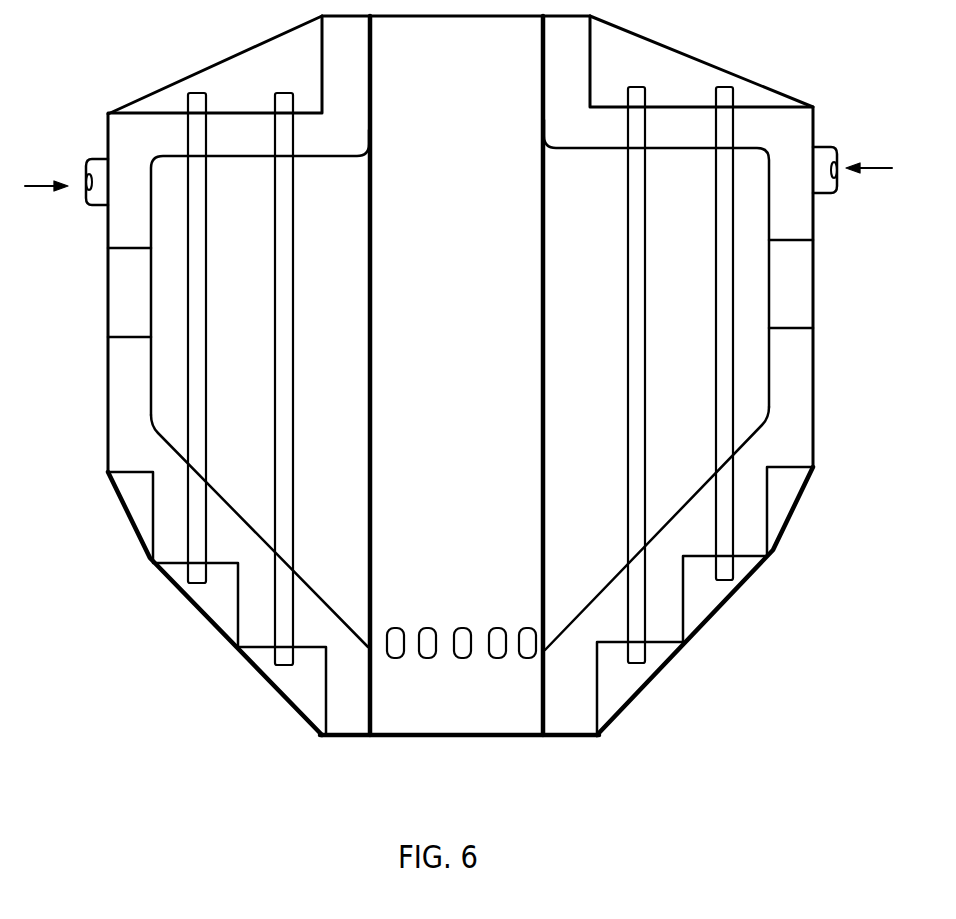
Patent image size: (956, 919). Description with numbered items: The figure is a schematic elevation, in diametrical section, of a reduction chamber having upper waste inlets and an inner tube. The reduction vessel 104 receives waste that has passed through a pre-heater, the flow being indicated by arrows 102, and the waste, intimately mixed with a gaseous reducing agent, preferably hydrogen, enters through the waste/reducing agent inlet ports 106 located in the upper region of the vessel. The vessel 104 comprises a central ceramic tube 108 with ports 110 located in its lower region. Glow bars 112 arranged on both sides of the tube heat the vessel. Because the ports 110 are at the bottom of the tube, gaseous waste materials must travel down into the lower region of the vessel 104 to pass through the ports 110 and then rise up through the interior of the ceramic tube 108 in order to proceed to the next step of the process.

The arrows 102 is at (40, 184).
The reduction vessel 104 is at (194, 707).
The waste/reducing agent inlet ports 106 is at (102, 160).
The ceramic tube 108 is at (484, 699).
The ports 110 is at (461, 627).
The glow bars 112 is at (189, 370).